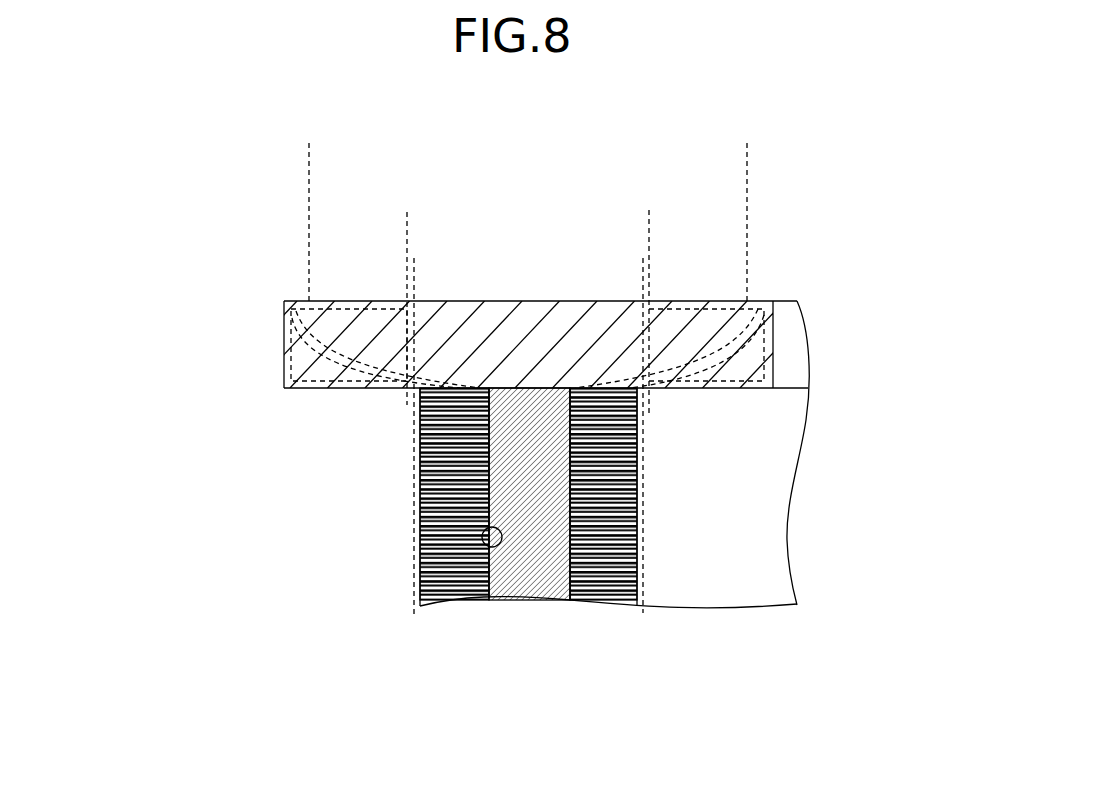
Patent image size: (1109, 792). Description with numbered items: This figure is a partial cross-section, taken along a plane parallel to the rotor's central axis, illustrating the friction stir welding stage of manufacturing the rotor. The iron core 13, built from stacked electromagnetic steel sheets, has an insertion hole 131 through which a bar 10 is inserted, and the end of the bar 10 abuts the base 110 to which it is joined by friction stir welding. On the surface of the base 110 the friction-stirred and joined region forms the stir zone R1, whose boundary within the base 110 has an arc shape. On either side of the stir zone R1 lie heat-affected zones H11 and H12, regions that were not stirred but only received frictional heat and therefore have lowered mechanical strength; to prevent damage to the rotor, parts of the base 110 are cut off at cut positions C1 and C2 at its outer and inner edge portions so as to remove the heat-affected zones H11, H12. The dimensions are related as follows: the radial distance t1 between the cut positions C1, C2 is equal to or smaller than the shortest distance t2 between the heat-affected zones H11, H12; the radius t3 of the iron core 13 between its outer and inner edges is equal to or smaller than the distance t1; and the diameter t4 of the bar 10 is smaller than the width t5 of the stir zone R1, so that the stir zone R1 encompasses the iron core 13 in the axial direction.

The bar 10 is at (508, 492).
The iron core 13 is at (419, 452).
The insertion hole 131 is at (483, 546).
The base 110 is at (285, 350).
The heat-affected zone H11 is at (283, 313).
The heat-affected zone H12 is at (760, 302).
The stir zone R1 is at (343, 312).
The cut position C1 is at (406, 290).
The cut position C2 is at (650, 285).
The distance between cut positions t1 is at (643, 269).
The shortest distance between heat-affected zones t2 is at (649, 226).
The radius of the iron core t3 is at (637, 605).
The diameter of the bar t4 is at (570, 600).
The width of the stir zone t5 is at (747, 157).